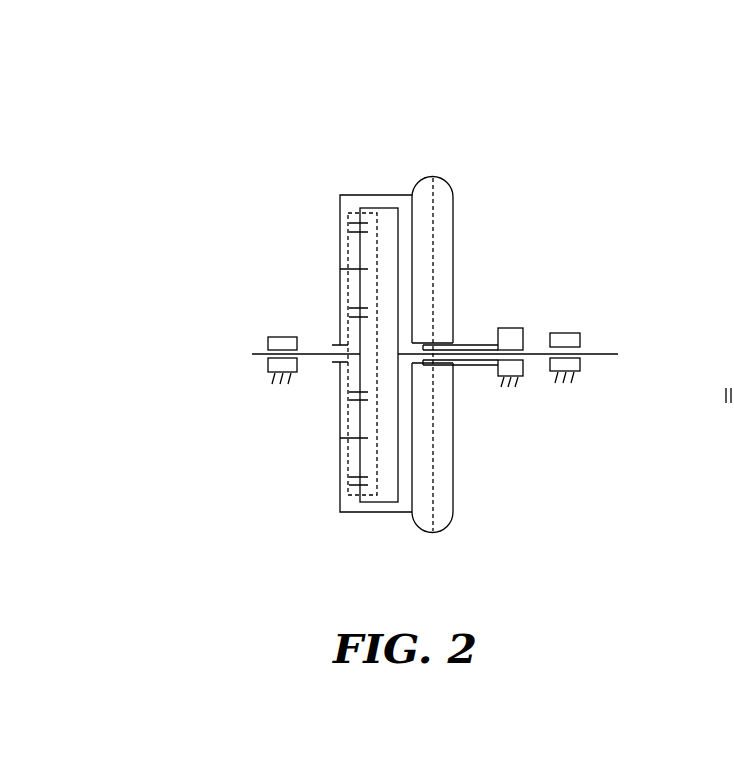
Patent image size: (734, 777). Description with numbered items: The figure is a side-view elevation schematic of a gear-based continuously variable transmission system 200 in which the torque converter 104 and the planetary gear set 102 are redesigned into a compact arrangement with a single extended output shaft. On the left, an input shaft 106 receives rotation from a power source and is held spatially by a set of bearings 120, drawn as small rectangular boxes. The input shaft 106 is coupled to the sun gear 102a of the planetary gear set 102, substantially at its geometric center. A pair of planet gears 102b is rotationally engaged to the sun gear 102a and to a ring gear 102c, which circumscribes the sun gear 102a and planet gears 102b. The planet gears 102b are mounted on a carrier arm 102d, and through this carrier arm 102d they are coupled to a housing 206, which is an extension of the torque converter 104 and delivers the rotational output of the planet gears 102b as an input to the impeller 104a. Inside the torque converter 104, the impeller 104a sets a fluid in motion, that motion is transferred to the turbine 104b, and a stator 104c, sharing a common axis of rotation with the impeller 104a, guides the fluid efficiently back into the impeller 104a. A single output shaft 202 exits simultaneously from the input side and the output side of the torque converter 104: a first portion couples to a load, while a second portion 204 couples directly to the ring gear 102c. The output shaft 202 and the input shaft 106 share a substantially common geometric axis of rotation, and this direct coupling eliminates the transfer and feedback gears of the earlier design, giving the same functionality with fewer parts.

The continuously variable transmission system 200 is at (564, 104).
The planetary gear set 102 is at (378, 226).
The sun gear 102a is at (349, 317).
The planet gears 102b is at (349, 308).
The ring gear 102c is at (349, 223).
The carrier arm 102d is at (352, 268).
The torque converter 104 is at (466, 203).
The impeller 104a is at (425, 180).
The turbine 104b is at (441, 522).
The stator 104c is at (509, 316).
The input shaft 106 is at (246, 361).
The bearings 120 is at (273, 376).
The output shaft 202 is at (592, 367).
The second portion of output shaft 204 is at (402, 356).
The housing 206 is at (355, 513).